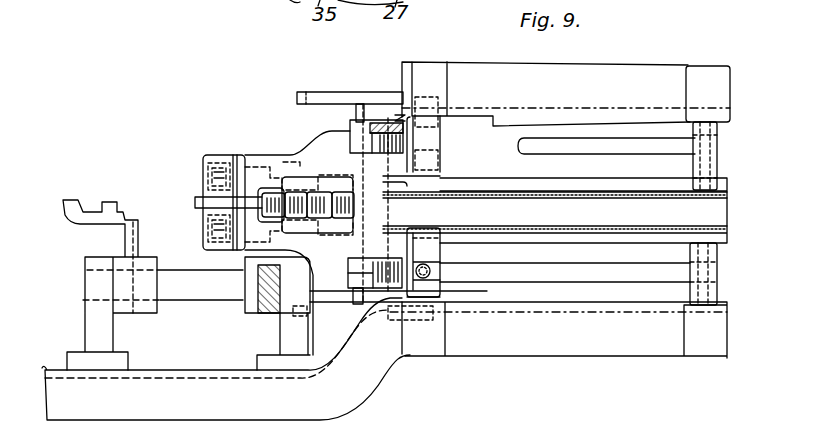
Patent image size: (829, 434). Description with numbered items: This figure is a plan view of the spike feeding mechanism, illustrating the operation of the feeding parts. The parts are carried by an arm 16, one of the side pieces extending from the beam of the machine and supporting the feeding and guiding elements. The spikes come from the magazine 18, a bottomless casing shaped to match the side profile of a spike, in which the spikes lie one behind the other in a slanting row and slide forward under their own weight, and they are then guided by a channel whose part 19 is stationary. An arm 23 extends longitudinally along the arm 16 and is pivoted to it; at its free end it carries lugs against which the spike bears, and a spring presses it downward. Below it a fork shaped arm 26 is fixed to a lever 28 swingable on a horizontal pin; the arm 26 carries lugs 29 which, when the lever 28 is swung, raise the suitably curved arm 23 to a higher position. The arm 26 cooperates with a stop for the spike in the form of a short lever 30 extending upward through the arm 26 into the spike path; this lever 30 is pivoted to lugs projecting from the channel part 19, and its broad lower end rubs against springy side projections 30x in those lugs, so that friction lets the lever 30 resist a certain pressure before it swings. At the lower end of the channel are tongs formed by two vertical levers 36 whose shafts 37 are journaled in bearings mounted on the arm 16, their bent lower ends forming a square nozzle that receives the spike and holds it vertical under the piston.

The arm 16 is at (559, 210).
The magazine 18 is at (572, 200).
The stationary part of the channel 19 is at (282, 164).
The arm 23 is at (603, 150).
The fork shaped arm 26 is at (310, 243).
The lever 28 is at (380, 122).
The lugs 29 is at (360, 143).
The lever 30 is at (241, 255).
The springy side projections 30x is at (215, 182).
The vertical levers 36 is at (90, 240).
The shafts 37 is at (163, 285).